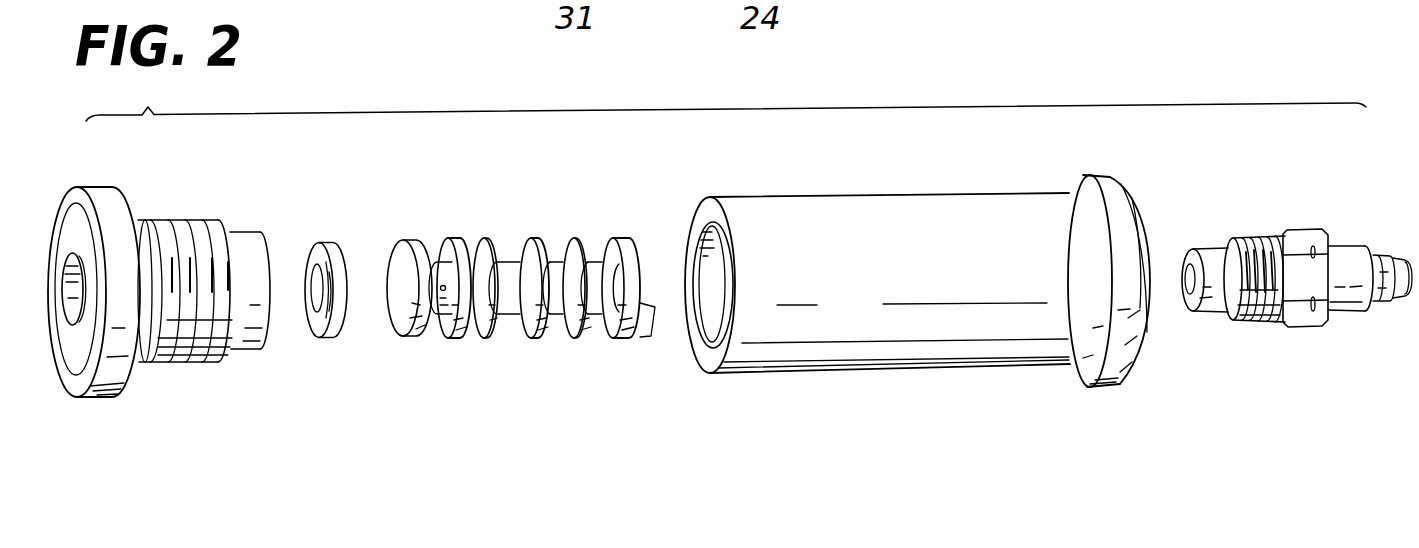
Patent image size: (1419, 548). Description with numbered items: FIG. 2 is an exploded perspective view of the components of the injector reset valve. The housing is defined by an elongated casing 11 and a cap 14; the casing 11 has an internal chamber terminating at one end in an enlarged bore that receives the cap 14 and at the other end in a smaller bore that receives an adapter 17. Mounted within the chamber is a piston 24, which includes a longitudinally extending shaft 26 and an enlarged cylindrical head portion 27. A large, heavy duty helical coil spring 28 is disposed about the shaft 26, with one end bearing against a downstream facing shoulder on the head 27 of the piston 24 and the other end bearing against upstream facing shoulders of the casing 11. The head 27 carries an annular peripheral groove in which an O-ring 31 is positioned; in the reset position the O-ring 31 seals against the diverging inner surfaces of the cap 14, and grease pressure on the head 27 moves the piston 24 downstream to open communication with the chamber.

The elongated casing 11 is at (903, 196).
The cap 14 is at (103, 186).
The adapter 17 is at (1293, 228).
The piston 24 is at (409, 239).
The shaft 26 is at (577, 250).
The head portion 27 is at (461, 234).
The helical coil spring 28 is at (537, 240).
The O-ring 31 is at (325, 242).